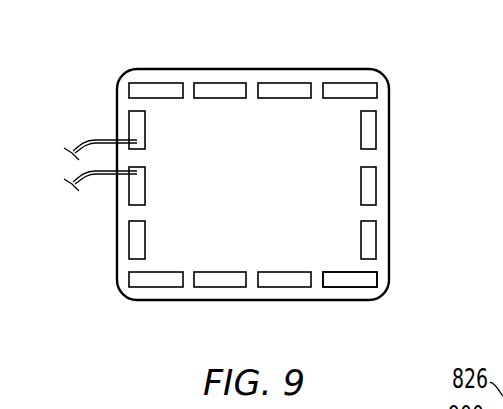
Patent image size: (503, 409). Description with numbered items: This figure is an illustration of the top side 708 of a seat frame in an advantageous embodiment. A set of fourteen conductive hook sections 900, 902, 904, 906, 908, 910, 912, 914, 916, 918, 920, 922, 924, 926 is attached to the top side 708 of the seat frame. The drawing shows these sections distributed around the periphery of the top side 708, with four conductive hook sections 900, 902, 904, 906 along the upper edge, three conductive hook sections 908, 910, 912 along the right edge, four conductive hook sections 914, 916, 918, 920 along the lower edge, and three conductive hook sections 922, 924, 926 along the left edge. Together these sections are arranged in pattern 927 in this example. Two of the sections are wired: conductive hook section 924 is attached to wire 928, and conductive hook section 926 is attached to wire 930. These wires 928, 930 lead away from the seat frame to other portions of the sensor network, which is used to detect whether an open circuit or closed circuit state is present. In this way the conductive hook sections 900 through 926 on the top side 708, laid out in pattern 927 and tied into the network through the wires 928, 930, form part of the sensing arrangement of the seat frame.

The top side 708 is at (272, 200).
The conductive hook section 900 is at (153, 83).
The conductive hook section 902 is at (220, 83).
The conductive hook section 904 is at (283, 83).
The conductive hook section 906 is at (348, 83).
The conductive hook section 908 is at (376, 129).
The conductive hook section 910 is at (376, 179).
The conductive hook section 912 is at (376, 241).
The conductive hook section 914 is at (348, 288).
The conductive hook section 916 is at (283, 288).
The conductive hook section 918 is at (220, 288).
The conductive hook section 920 is at (157, 288).
The conductive hook section 922 is at (129, 244).
The conductive hook section 924 is at (129, 195).
The conductive hook section 926 is at (129, 118).
The pattern 927 is at (370, 279).
The wire 928 is at (78, 172).
The wire 930 is at (78, 138).